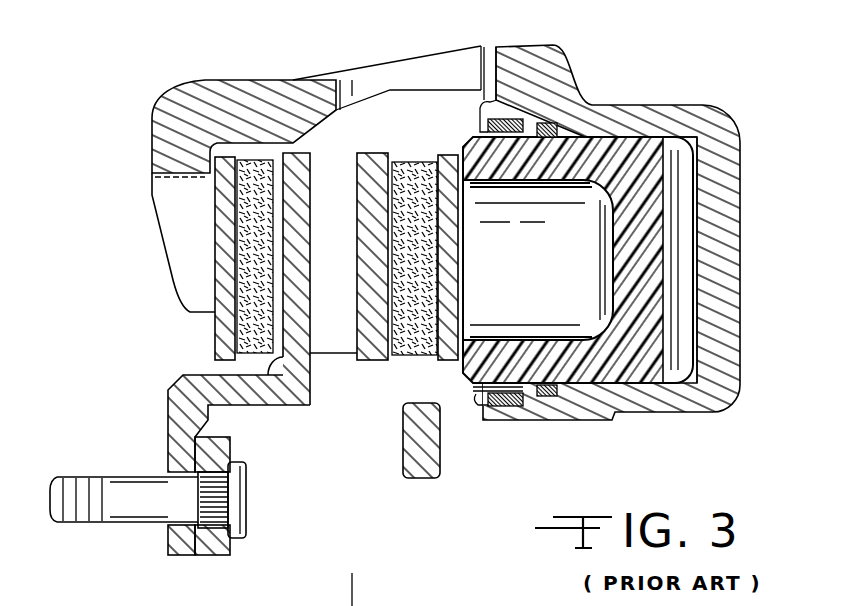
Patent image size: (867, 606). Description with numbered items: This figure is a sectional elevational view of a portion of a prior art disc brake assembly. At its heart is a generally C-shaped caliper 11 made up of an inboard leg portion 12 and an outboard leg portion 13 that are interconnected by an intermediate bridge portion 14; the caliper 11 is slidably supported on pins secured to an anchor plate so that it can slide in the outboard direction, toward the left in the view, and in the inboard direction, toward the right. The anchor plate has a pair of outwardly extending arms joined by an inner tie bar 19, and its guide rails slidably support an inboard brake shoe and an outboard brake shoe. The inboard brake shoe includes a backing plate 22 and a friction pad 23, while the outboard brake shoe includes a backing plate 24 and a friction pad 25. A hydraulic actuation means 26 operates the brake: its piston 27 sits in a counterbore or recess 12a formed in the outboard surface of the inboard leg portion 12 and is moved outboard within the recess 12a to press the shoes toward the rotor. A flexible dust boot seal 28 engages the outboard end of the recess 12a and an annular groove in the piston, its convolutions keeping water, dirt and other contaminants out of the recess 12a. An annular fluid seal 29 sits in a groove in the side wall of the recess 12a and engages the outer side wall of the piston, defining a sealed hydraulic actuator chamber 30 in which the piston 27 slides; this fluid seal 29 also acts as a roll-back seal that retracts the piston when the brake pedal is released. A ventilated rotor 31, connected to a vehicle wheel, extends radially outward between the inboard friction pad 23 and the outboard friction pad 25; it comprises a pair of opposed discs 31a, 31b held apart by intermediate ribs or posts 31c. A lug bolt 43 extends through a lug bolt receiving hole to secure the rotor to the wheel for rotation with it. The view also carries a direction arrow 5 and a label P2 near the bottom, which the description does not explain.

The caliper 11 is at (405, 42).
The inboard leg portion 12 is at (740, 140).
The recess 12a is at (708, 395).
The outboard leg portion 13 is at (167, 150).
The bridge portion 14 is at (540, 68).
The inner tie bar 19 is at (403, 466).
The backing plate 22 is at (457, 152).
The friction pad 23 is at (440, 357).
The backing plate 24 is at (217, 323).
The friction pad 25 is at (240, 358).
The actuation means 26 is at (613, 94).
The piston 27 is at (517, 352).
The dust boot seal 28 is at (483, 400).
The fluid seal 29 is at (551, 386).
The hydraulic actuator chamber 30 is at (690, 250).
The rotor 31 is at (160, 412).
The disc 31a is at (385, 368).
The disc 31b is at (272, 402).
The ribs or posts 31c is at (337, 360).
The lug bolt 43 is at (128, 525).
The section direction arrow 5 is at (315, 580).
The pressure P2 is at (396, 605).